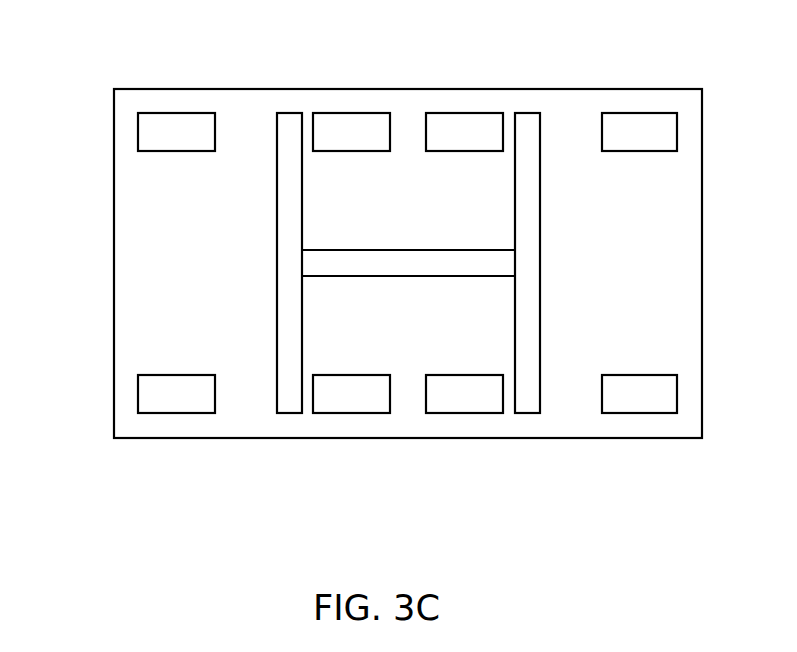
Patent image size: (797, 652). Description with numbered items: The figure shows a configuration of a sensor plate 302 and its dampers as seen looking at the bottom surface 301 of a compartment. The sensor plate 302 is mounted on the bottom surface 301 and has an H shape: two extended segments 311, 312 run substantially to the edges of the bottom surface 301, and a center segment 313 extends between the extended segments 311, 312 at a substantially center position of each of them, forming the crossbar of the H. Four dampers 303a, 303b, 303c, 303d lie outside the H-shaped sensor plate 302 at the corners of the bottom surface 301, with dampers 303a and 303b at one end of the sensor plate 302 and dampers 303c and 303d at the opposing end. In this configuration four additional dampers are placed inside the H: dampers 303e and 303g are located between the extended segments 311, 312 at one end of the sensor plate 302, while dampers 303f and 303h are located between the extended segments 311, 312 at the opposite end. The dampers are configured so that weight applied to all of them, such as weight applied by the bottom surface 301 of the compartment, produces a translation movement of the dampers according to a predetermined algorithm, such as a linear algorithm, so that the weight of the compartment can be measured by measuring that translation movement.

The bottom surface 301 is at (277, 88).
The sensor plate 302 is at (562, 145).
The extended segment 311 is at (282, 313).
The extended segment 312 is at (540, 279).
The center segment 313 is at (420, 252).
The damper 303a is at (158, 122).
The damper 303b is at (627, 113).
The damper 303c is at (627, 413).
The damper 303d is at (165, 413).
The damper 303e is at (322, 115).
The damper 303f is at (327, 413).
The damper 303g is at (448, 113).
The damper 303h is at (452, 413).